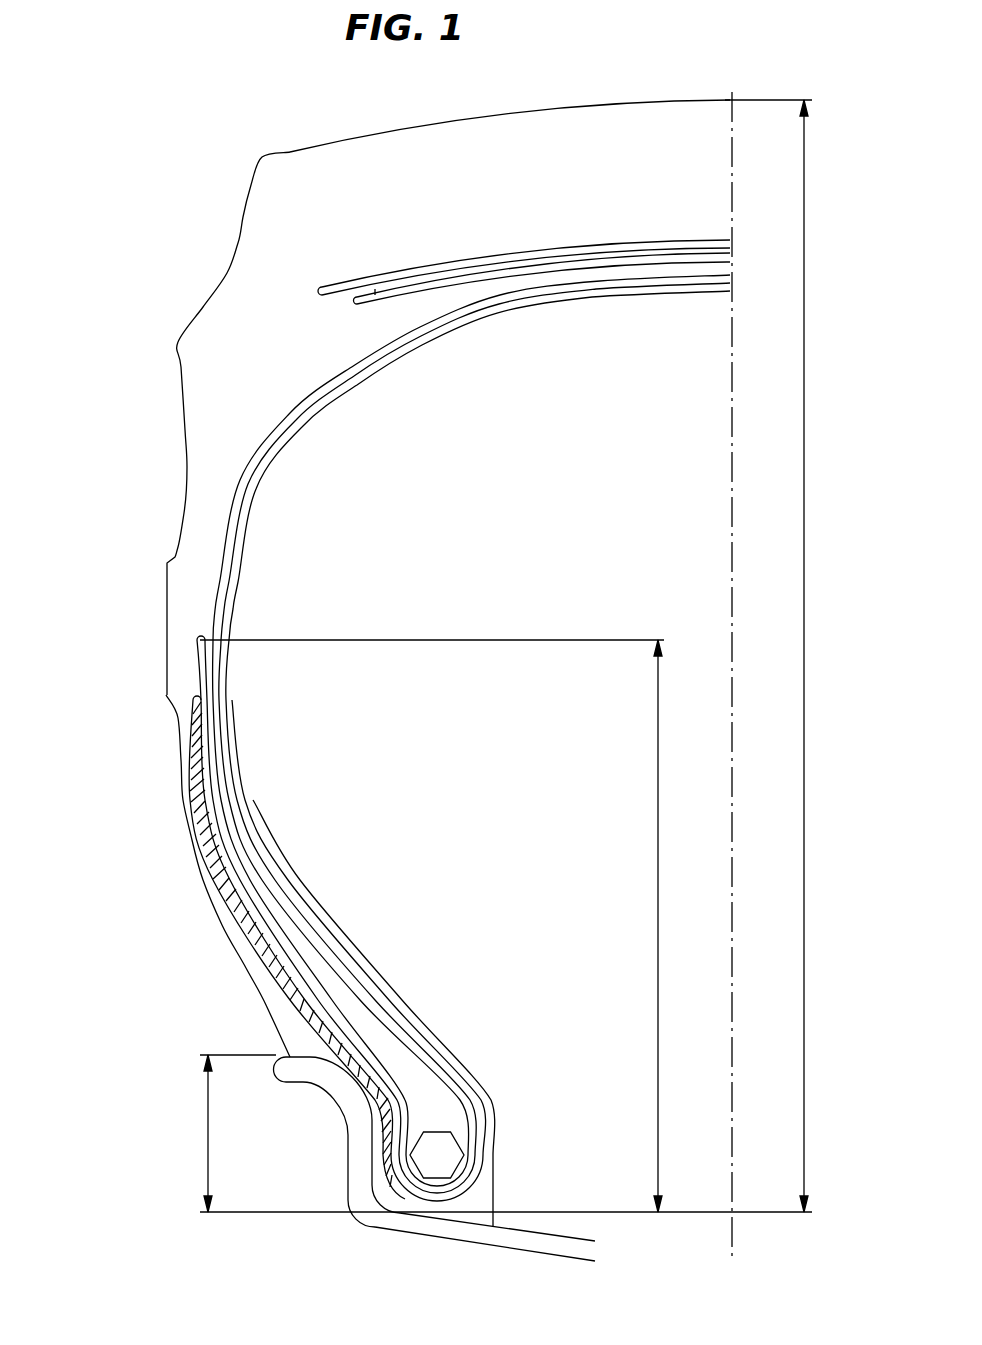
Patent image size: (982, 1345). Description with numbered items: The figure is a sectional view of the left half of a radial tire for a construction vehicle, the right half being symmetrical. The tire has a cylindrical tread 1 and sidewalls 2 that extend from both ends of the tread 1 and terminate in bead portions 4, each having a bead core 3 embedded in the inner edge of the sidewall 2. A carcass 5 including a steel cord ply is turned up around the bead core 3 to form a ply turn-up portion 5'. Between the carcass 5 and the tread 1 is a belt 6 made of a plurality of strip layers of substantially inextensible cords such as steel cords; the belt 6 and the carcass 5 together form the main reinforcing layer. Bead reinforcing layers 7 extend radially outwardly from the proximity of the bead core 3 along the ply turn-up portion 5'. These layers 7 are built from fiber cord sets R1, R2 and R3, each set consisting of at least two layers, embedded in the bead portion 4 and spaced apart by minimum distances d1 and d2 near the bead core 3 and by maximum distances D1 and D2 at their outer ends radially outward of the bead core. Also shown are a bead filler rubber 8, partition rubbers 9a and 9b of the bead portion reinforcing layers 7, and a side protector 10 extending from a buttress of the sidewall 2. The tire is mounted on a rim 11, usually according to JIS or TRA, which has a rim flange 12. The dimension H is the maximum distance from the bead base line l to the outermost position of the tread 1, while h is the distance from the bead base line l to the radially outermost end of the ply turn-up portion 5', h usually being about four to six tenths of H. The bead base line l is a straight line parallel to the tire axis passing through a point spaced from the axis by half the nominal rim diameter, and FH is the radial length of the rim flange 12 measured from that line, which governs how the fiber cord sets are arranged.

The tread 1 is at (643, 118).
The sidewall 2 is at (175, 557).
The bead core 3 is at (452, 1155).
The bead portion 4 is at (262, 1010).
The carcass 5 is at (474, 719).
The ply turn-up portion 5' is at (463, 715).
The belt 6 is at (668, 240).
The bead reinforcing layers 7 is at (372, 1040).
The bead filler rubber 8 is at (330, 968).
The partition rubber 9a is at (202, 773).
The partition rubber 9b is at (218, 883).
The side protector 10 is at (178, 340).
The rim 11 is at (483, 1235).
The rim flange 12 is at (355, 1165).
The maximum distance H is at (769, 656).
The distance h is at (432, 926).
The radial length of the rim flange FH is at (229, 1133).
The bead base line l is at (290, 1214).
The fiber cord set R1 is at (240, 930).
The fiber cord set R2 is at (260, 958).
The fiber cord set R3 is at (275, 997).
The maximum distance D1 is at (323, 970).
The maximum distance D2 is at (300, 1033).
The minimum distance d1 is at (405, 1195).
The minimum distance d2 is at (398, 1195).